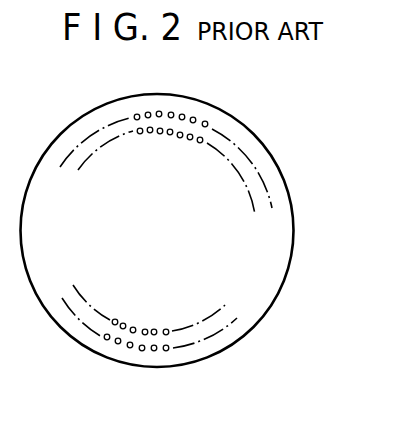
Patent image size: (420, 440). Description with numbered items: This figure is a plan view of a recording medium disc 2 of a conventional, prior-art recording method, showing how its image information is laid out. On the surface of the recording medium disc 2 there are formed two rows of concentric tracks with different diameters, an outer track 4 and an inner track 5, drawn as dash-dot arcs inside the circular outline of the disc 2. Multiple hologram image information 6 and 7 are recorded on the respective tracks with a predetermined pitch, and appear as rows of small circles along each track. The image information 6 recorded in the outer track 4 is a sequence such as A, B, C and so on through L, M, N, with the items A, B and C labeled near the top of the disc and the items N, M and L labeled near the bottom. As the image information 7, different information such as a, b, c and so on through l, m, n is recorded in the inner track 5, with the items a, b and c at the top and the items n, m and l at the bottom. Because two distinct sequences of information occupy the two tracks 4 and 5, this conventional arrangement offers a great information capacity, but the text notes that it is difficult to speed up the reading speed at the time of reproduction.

The recording medium disc 2 is at (267, 150).
The outer track 4 is at (97, 130).
The inner track 5 is at (105, 147).
The hologram image information 6 is at (208, 125).
The hologram image information 7 is at (199, 143).
The image information item A is at (164, 109).
The image information item B is at (176, 111).
The image information item C is at (187, 113).
The image information item a is at (149, 136).
The image information item b is at (168, 138).
The image information item c is at (179, 141).
The image information item n is at (135, 323).
The image information item m is at (148, 326).
The image information item l is at (161, 324).
The image information item N is at (128, 348).
The image information item M is at (141, 352).
The image information item L is at (153, 353).